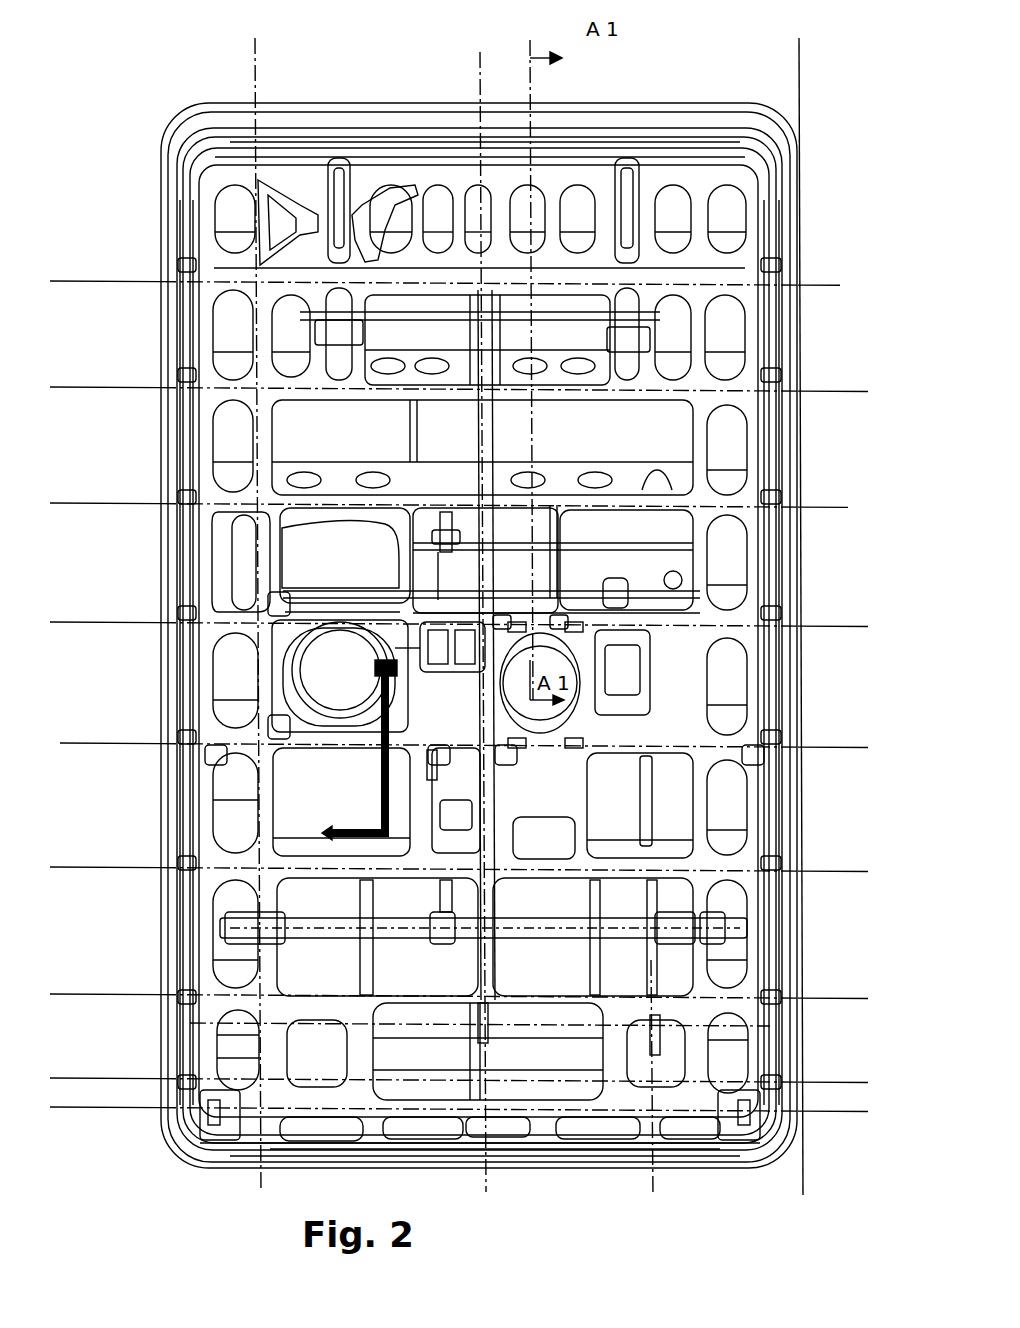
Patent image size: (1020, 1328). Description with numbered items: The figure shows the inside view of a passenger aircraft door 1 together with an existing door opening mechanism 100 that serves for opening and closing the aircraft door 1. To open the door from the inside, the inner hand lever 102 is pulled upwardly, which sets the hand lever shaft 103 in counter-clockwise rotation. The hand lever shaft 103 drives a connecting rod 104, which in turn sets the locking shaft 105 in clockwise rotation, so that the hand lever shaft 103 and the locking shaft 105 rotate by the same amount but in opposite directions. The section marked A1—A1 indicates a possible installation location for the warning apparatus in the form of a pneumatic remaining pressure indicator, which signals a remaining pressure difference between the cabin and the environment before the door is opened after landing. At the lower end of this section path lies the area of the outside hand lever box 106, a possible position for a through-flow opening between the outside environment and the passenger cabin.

The aircraft door 1 is at (190, 112).
The door opening mechanism 100 is at (333, 770).
The inner hand lever 102 is at (343, 832).
The hand lever shaft 103 is at (330, 526).
The connecting rod 104 is at (487, 442).
The locking shaft 105 is at (585, 315).
The outside hand lever box 106 is at (590, 785).